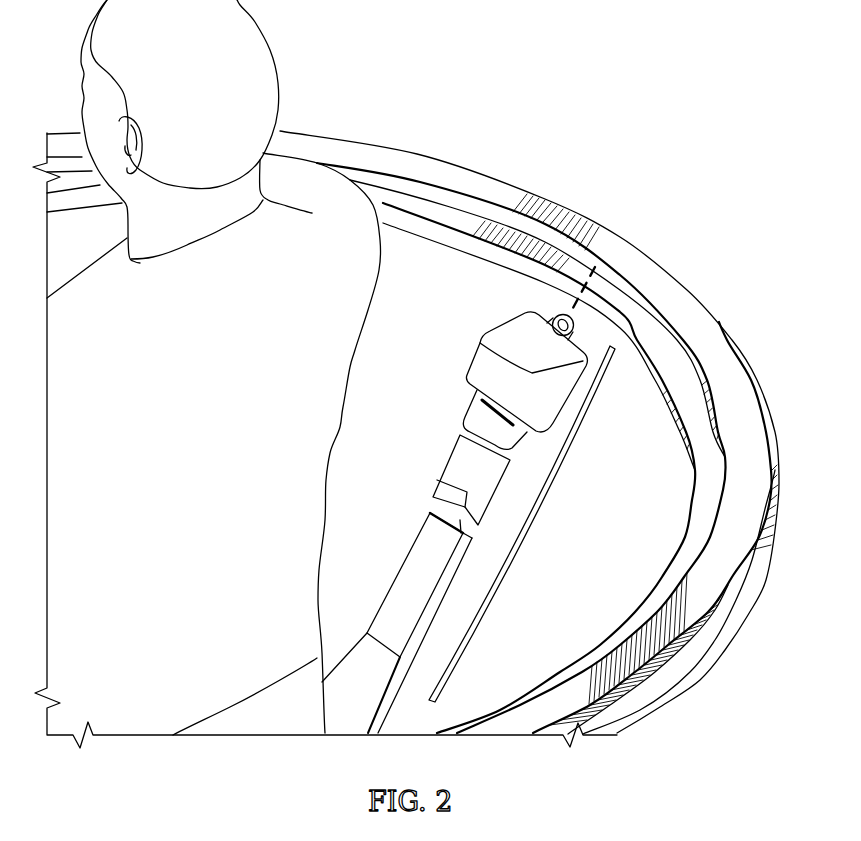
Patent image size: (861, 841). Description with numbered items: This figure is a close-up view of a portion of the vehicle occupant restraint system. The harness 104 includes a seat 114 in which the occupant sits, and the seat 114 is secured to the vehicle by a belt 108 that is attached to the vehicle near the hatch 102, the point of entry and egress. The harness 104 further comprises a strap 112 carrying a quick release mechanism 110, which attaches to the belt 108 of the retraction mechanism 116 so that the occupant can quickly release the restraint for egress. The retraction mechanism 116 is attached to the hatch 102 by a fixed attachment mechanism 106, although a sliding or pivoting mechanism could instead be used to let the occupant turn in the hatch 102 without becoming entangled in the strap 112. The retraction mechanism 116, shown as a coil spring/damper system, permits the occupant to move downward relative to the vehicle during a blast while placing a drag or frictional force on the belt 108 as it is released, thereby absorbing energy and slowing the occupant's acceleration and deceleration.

The hatch 102 is at (473, 167).
The harness 104 is at (525, 532).
The fixed attachment mechanism 106 is at (560, 308).
The belt 108 is at (469, 400).
The quick release mechanism 110 is at (450, 455).
The strap 112 is at (407, 552).
The seat 114 is at (356, 660).
The retraction mechanism 116 is at (478, 358).